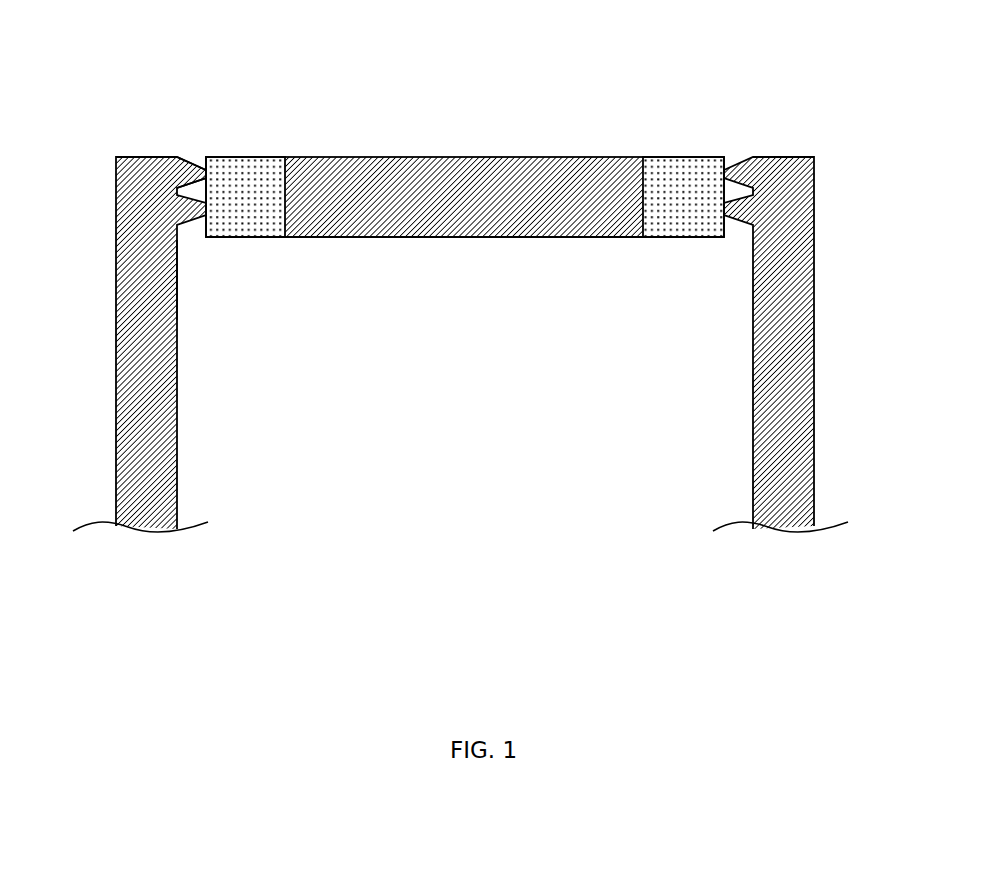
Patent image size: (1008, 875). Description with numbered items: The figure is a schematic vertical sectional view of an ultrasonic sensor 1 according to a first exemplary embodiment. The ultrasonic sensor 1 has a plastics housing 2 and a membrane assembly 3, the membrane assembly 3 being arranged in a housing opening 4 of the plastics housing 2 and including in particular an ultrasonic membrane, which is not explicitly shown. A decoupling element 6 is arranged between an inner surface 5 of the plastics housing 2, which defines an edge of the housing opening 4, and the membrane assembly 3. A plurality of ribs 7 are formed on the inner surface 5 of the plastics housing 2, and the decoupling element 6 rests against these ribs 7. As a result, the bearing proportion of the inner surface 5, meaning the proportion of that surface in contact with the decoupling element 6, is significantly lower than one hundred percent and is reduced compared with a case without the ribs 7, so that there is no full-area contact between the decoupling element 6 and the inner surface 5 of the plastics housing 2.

The ultrasonic sensor 1 is at (838, 68).
The plastics housing 2 is at (116, 342).
The membrane assembly 3 is at (528, 157).
The housing opening 4 is at (537, 277).
The inner surface 5 is at (193, 272).
The decoupling element 6 is at (245, 157).
The ribs 7 is at (195, 150).